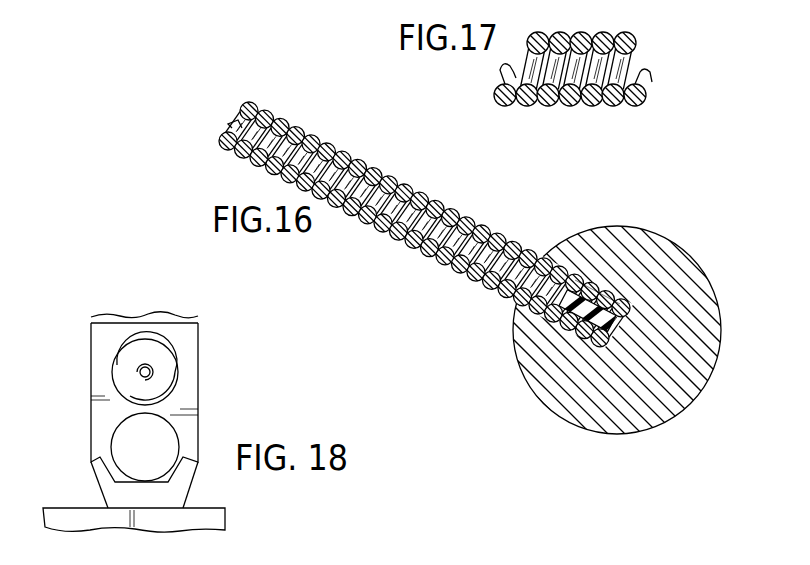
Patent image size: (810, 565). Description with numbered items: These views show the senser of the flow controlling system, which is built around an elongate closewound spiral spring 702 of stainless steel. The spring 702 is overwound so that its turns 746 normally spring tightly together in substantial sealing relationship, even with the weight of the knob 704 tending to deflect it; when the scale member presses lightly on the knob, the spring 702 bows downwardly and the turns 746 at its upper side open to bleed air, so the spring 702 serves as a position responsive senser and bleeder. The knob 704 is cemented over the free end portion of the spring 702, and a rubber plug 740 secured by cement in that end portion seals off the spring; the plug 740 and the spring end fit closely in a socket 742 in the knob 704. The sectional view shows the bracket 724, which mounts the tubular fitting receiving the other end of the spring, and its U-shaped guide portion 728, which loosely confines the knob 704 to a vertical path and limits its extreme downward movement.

In FIG. 16, the closewound spiral spring 702 is at (426, 240).
In FIG. 17, the closewound spiral spring 702 is at (578, 72).
In FIG. 18, the closewound spiral spring 702 is at (142, 362).
In FIG. 16, the knob 704 is at (653, 233).
In FIG. 18, the knob 704 is at (178, 362).
In FIG. 18, the bracket 724 is at (90, 330).
In FIG. 18, the U-shaped guide portion 728 is at (105, 490).
In FIG. 16, the rubber plug 740 is at (600, 292).
In FIG. 16, the socket 742 is at (567, 328).
In FIG. 16, the turns 746 is at (475, 227).
In FIG. 17, the turns 746 is at (568, 33).